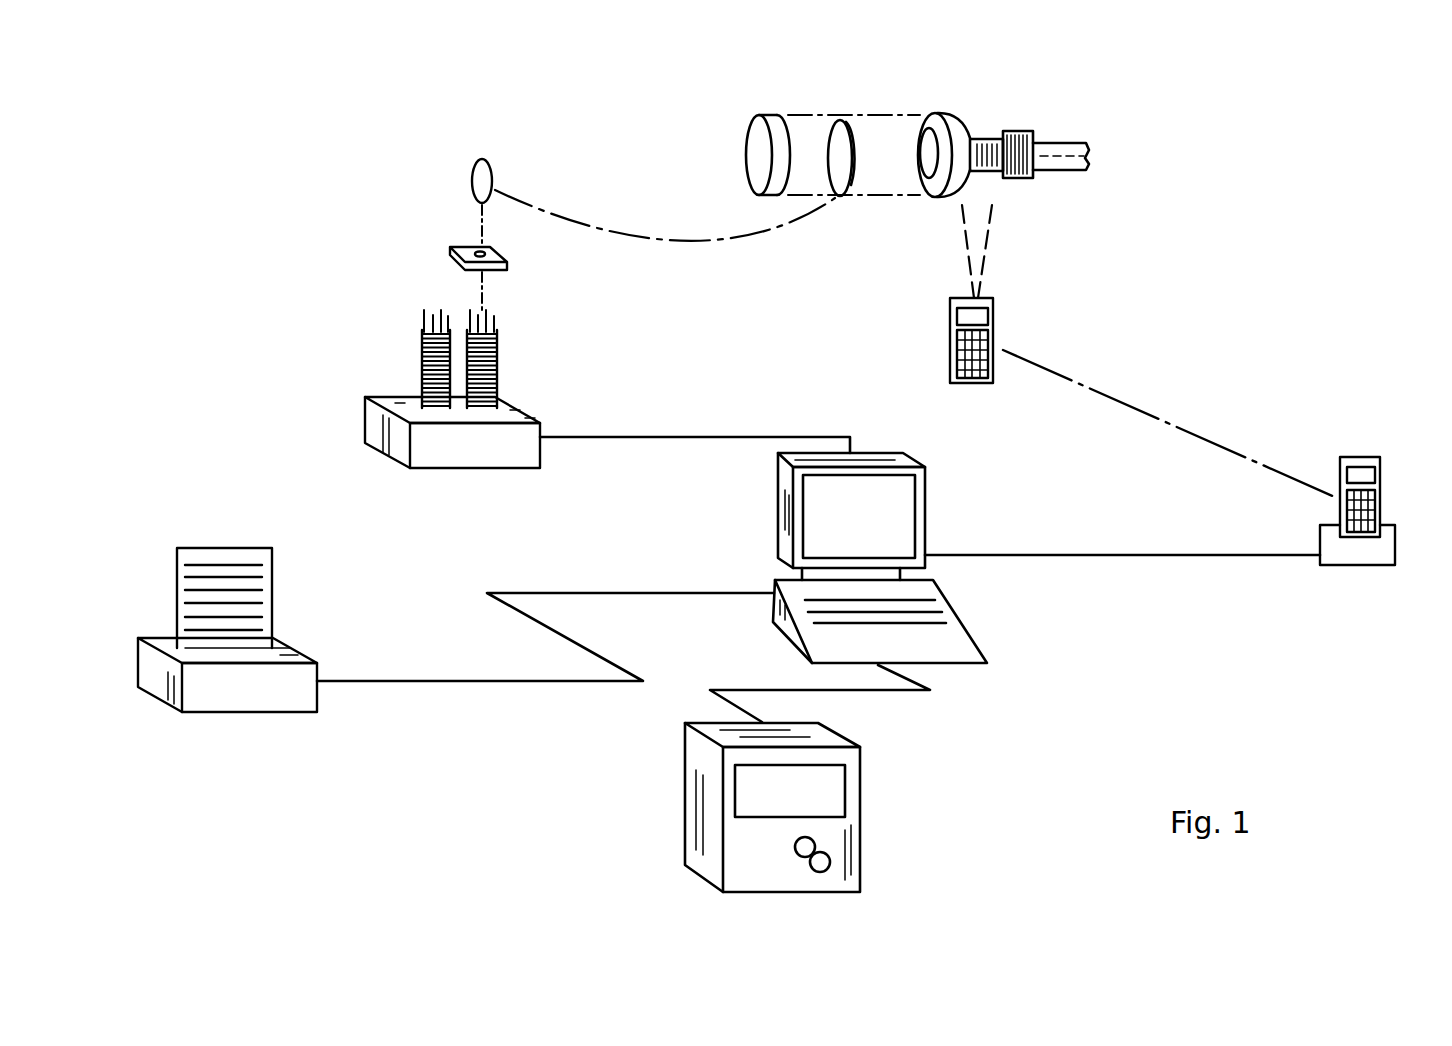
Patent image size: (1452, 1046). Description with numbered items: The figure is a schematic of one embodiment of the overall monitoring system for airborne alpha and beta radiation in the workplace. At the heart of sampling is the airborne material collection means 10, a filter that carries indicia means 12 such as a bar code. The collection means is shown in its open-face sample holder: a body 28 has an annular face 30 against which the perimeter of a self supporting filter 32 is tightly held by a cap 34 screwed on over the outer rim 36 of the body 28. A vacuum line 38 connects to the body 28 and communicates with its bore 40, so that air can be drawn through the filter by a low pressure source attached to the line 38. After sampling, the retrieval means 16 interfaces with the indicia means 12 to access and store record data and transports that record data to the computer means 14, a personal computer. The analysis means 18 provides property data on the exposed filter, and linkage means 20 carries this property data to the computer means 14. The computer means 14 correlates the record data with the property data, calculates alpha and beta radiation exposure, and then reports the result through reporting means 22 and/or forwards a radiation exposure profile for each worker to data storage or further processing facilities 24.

The airborne material collection means 10 is at (947, 92).
The indicia means 12 is at (985, 133).
The computer means 14 is at (927, 563).
The retrieval means 16 is at (1382, 480).
The analysis means 18 is at (502, 403).
The linkage means 20 is at (668, 437).
The reporting means 22 is at (255, 702).
The data storage or further processing facilities 24 is at (860, 792).
The body 28 is at (950, 138).
The annular face 30 is at (927, 197).
The self supporting filter 32 is at (850, 170).
The cap 34 is at (746, 183).
The outer rim 36 is at (943, 170).
The vacuum line 38 is at (1048, 142).
The bore 40 is at (928, 152).